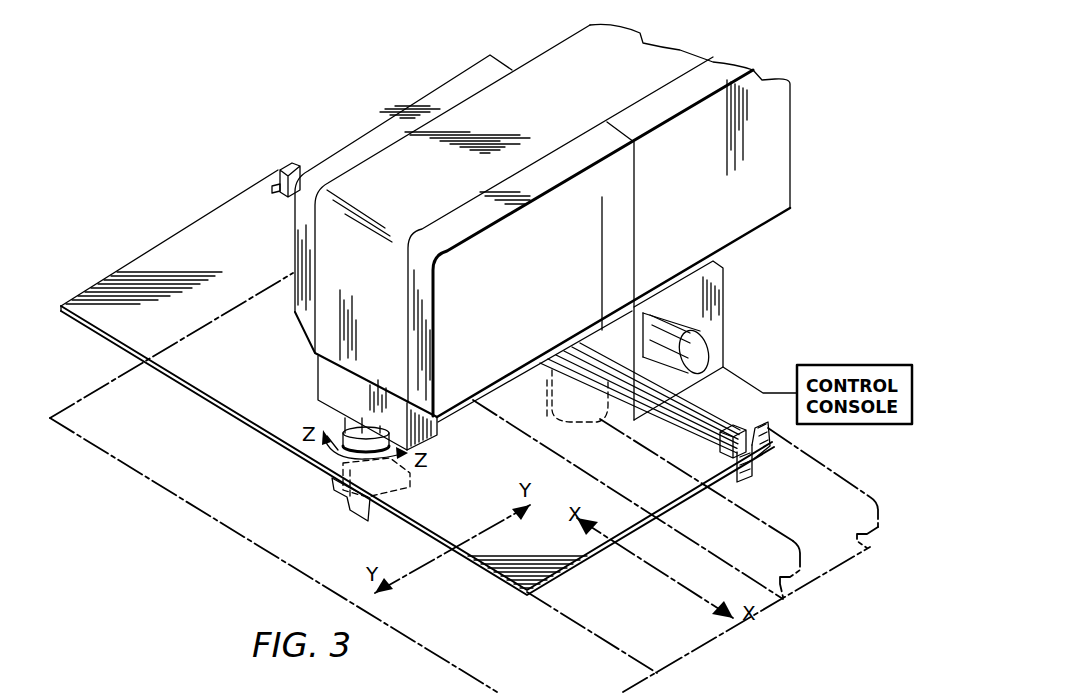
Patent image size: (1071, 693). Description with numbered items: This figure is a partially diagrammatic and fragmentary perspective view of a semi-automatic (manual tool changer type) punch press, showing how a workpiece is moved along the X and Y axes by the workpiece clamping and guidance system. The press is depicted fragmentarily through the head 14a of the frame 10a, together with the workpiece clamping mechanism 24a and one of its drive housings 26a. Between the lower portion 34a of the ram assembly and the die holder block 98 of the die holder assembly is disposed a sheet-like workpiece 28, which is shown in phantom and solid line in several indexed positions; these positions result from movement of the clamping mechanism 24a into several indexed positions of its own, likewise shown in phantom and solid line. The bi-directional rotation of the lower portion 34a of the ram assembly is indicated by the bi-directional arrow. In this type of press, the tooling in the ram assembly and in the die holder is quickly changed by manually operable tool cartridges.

The head 14a is at (555, 83).
The frame 10a is at (750, 243).
The drive housing 26a is at (781, 335).
The workpiece clamping mechanism 24a is at (775, 458).
The sheet-like workpiece 28 is at (127, 289).
The lower portion of the ram assembly 34a is at (340, 424).
The die holder block 98 is at (323, 472).